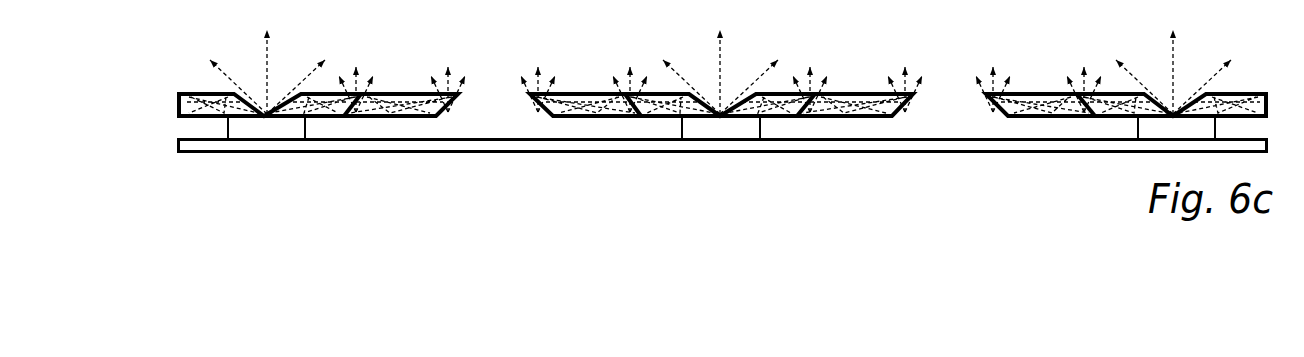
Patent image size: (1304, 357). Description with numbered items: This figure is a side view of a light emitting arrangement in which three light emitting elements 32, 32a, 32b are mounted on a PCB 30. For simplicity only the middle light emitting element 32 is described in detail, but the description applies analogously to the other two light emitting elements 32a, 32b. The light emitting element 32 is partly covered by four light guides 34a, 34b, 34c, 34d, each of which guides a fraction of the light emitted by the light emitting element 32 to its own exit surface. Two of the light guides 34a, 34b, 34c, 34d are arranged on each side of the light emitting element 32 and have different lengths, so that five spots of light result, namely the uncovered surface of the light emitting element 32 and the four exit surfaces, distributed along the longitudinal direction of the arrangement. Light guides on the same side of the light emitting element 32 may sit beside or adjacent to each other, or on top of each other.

The PCB 30 is at (1033, 145).
The light emitting element 32 is at (738, 142).
The light emitting element 32a is at (267, 125).
The light emitting element 32b is at (1152, 128).
The light guide 34a is at (673, 118).
The light guide 34b is at (777, 118).
The light guide 34c is at (617, 118).
The light guide 34d is at (860, 118).